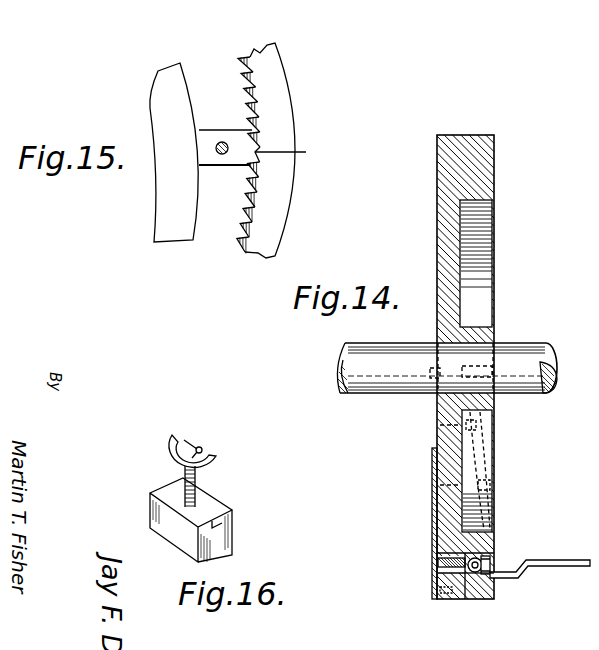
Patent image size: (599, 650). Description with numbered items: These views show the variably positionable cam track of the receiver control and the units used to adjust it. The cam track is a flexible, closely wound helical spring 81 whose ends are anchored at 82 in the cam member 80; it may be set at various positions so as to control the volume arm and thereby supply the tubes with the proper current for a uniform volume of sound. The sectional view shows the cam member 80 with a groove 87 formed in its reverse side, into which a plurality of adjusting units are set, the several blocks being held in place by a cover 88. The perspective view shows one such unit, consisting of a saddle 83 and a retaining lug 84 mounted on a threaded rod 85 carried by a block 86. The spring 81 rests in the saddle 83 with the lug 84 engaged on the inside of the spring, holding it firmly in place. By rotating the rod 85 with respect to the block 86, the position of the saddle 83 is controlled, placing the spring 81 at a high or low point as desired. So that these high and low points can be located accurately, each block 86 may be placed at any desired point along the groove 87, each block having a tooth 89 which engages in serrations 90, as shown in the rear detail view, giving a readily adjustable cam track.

In FIG. 14, the cam member 80 is at (437, 221).
In FIG. 15, the cam member 80 is at (278, 198).
In FIG. 14, the cam track spring 81 is at (482, 598).
In FIG. 15, the cam track spring 81 is at (212, 222).
In FIG. 14, the anchor 82 is at (482, 560).
In FIG. 14, the saddle 83 is at (584, 558).
In FIG. 16, the saddle 83 is at (216, 462).
In FIG. 16, the retaining lug 84 is at (202, 448).
In FIG. 14, the threaded rod 85 is at (437, 560).
In FIG. 15, the threaded rod 85 is at (218, 153).
In FIG. 16, the threaded rod 85 is at (196, 486).
In FIG. 16, the block 86 is at (178, 533).
In FIG. 14, the groove 87 is at (460, 580).
In FIG. 15, the groove 87 is at (211, 130).
In FIG. 14, the cover 88 is at (437, 572).
In FIG. 15, the tooth 89 is at (292, 154).
In FIG. 16, the tooth 89 is at (233, 551).
In FIG. 15, the serrations 90 is at (248, 181).